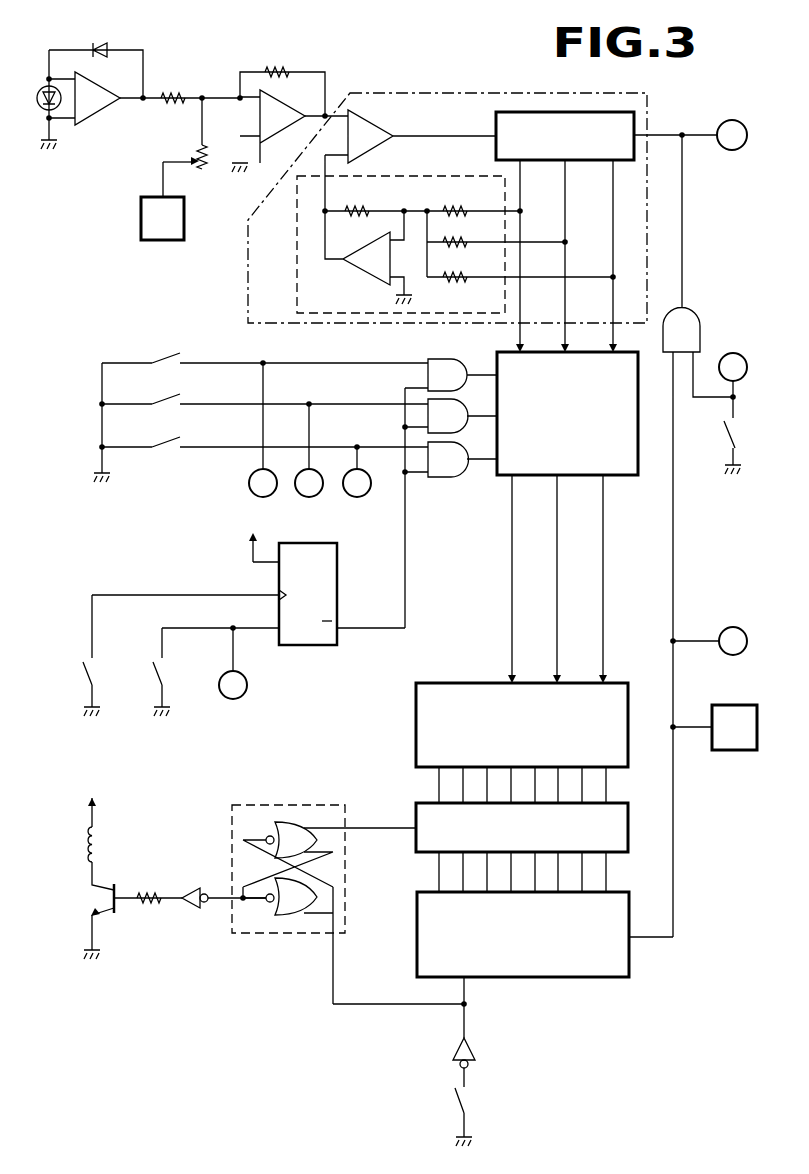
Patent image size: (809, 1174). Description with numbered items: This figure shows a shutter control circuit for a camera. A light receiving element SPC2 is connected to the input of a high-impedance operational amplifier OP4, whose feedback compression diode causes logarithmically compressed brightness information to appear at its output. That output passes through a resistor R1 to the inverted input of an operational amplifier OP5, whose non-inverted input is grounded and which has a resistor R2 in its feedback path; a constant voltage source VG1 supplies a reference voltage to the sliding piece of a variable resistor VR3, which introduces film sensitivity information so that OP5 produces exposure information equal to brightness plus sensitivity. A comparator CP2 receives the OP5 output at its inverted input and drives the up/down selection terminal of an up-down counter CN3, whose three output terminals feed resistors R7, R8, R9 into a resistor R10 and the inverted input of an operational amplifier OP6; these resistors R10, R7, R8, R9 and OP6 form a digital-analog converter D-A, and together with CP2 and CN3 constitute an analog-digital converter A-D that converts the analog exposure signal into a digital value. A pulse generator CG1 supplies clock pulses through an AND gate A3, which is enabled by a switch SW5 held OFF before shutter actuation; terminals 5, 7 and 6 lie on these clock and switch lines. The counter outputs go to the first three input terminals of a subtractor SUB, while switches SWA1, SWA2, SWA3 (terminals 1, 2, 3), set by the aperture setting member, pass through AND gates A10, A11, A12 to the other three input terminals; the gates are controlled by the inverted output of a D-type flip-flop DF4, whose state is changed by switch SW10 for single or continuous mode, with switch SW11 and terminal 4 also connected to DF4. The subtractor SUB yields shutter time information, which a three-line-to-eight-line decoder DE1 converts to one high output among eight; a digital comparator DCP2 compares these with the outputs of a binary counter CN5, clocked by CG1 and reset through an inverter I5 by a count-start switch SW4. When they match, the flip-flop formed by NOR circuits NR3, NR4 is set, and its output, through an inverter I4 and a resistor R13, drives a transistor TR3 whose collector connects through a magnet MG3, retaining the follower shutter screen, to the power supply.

The light receiving element SPC2 is at (57, 108).
The operational amplifier OP4 is at (97, 98).
The resistor R1 is at (173, 85).
The variable resistor VR3 is at (195, 147).
The constant voltage source VG1 is at (153, 201).
The resistor R2 is at (282, 80).
The operational amplifier OP5 is at (268, 130).
The comparator CP2 is at (410, 160).
The analog-digital converter A-D is at (484, 93).
The up-down counter CN3 is at (606, 232).
The terminal 5 is at (732, 135).
The digital-analog converter D-A is at (297, 242).
The resistor R10 is at (361, 198).
The resistor R7 is at (455, 198).
The resistor R8 is at (496, 232).
The resistor R9 is at (520, 267).
The operational amplifier OP6 is at (368, 257).
The switch SWA1 is at (265, 351).
The switch SWA2 is at (265, 392).
The switch SWA3 is at (265, 435).
The terminal 1 is at (263, 428).
The terminal 2 is at (309, 449).
The terminal 3 is at (357, 470).
The AND gate A10 is at (451, 375).
The AND gate A11 is at (449, 416).
The AND gate A12 is at (449, 459).
The subtractor SUB is at (567, 517).
The AND gate A3 is at (698, 536).
The terminal 7 is at (733, 367).
The switch SW5 is at (713, 427).
The terminal 6 is at (708, 641).
The pulse generator CG1 is at (713, 727).
The D-type flip-flop circuit DF4 is at (327, 589).
The switch SW11 is at (181, 655).
The switch SW10 is at (216, 672).
The terminal 4 is at (233, 662).
The 3-line-8-line decoder DE1 is at (522, 743).
The digital comparator DCP2 is at (466, 847).
The binary counter CN5 is at (481, 965).
The inverter I5 is at (474, 1062).
The switch SW4 is at (480, 1117).
The NOR circuit NR3 is at (288, 860).
The NOR circuit NR4 is at (288, 941).
The magnet MG3 is at (108, 818).
The transistor TR3 is at (86, 910).
The resistor R13 is at (148, 886).
The inverter I4 is at (224, 886).